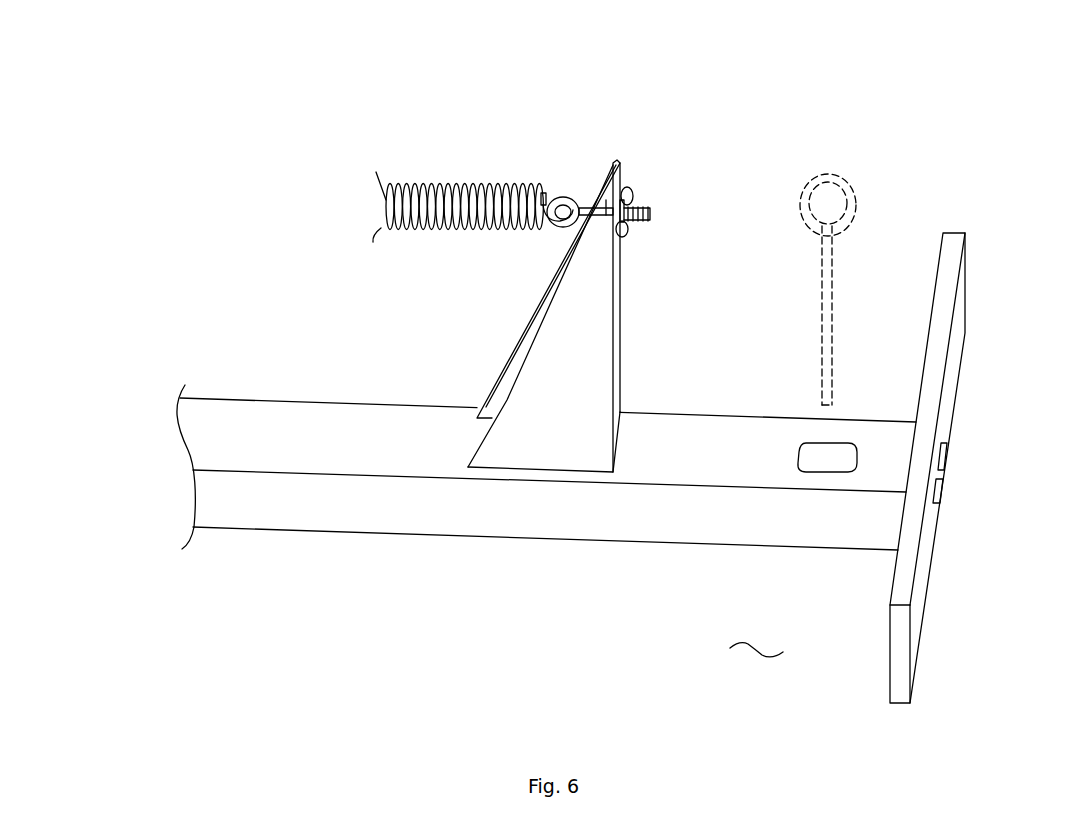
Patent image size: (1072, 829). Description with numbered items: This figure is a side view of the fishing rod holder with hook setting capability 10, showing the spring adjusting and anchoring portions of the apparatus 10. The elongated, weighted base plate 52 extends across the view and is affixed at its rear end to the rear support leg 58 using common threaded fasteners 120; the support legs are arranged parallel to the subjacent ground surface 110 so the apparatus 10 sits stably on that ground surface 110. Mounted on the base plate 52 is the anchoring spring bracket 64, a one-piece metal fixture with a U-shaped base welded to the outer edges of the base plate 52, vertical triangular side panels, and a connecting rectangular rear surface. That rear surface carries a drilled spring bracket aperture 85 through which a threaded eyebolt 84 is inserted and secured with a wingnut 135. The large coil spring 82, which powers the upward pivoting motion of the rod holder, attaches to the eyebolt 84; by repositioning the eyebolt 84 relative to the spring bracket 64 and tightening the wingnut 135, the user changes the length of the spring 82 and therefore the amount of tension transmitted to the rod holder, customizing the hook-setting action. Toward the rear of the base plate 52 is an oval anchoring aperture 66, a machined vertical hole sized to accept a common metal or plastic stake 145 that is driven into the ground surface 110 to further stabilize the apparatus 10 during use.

The fishing rod holder with hook setting capability 10 is at (110, 110).
The base plate 52 is at (315, 423).
The rear support leg 58 is at (960, 334).
The anchoring spring bracket 64 is at (553, 393).
The anchoring aperture 66 is at (805, 474).
The coil spring 82 is at (425, 190).
The threaded eyebolt 84 is at (565, 196).
The spring bracket aperture 85 is at (612, 191).
The ground surface 110 is at (752, 648).
The threaded fasteners 120 is at (940, 498).
The wingnut 135 is at (626, 231).
The stake 145 is at (852, 188).